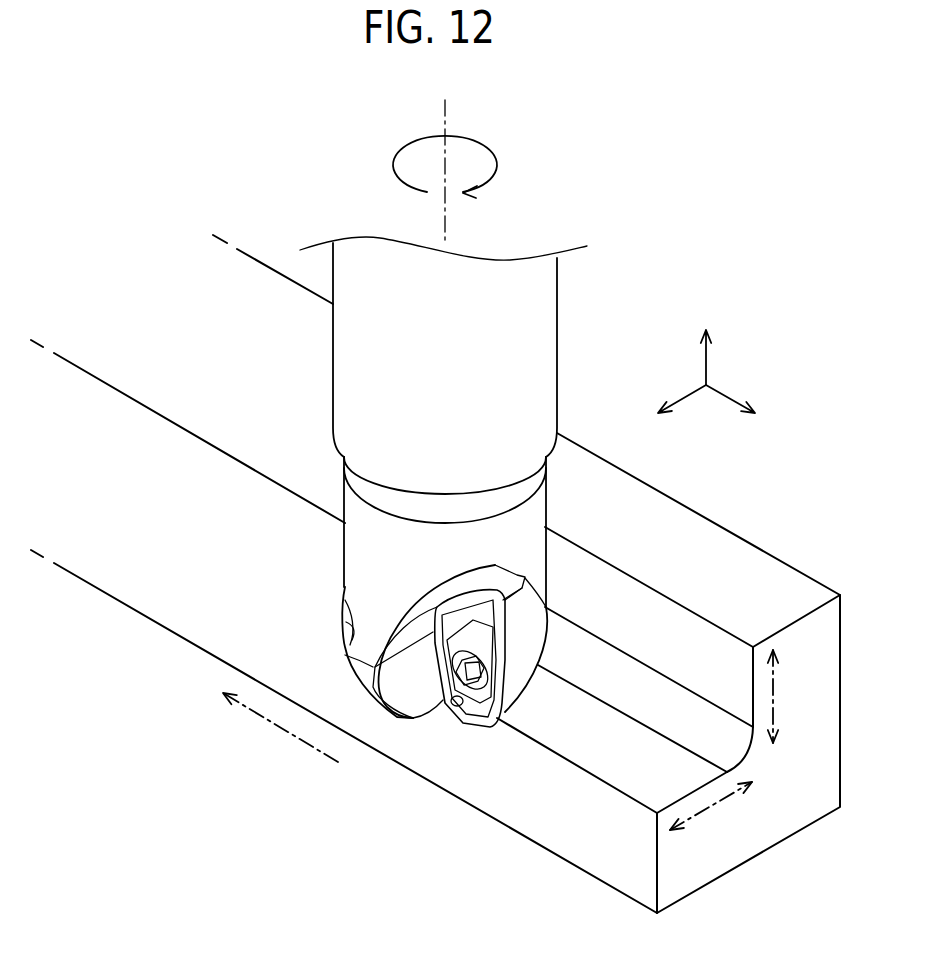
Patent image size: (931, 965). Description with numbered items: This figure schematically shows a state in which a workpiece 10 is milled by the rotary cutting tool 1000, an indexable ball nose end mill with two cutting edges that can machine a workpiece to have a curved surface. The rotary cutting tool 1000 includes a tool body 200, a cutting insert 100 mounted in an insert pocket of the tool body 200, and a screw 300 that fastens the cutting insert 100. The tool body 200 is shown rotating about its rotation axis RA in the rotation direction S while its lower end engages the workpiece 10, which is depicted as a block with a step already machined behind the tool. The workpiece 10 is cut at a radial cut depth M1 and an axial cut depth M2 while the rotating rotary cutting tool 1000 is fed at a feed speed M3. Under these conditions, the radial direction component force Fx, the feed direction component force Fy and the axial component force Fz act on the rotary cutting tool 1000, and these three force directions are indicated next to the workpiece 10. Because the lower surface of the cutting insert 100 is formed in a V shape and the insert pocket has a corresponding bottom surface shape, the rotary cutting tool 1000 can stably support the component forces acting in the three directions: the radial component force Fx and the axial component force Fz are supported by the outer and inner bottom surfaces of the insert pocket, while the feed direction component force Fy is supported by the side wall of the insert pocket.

The rotary cutting tool 1000 is at (322, 380).
The tool body 200 is at (522, 340).
The cutting insert 100 is at (512, 687).
The screw 300 is at (480, 685).
The workpiece 10 is at (727, 552).
The rotation axis RA is at (445, 156).
The rotation direction S is at (452, 167).
The radial direction component force Fx is at (667, 409).
The feed direction component force Fy is at (745, 409).
The axial component force Fz is at (707, 342).
The radial cut depth M1 is at (711, 812).
The axial cut depth M2 is at (791, 696).
The feed speed M3 is at (280, 727).